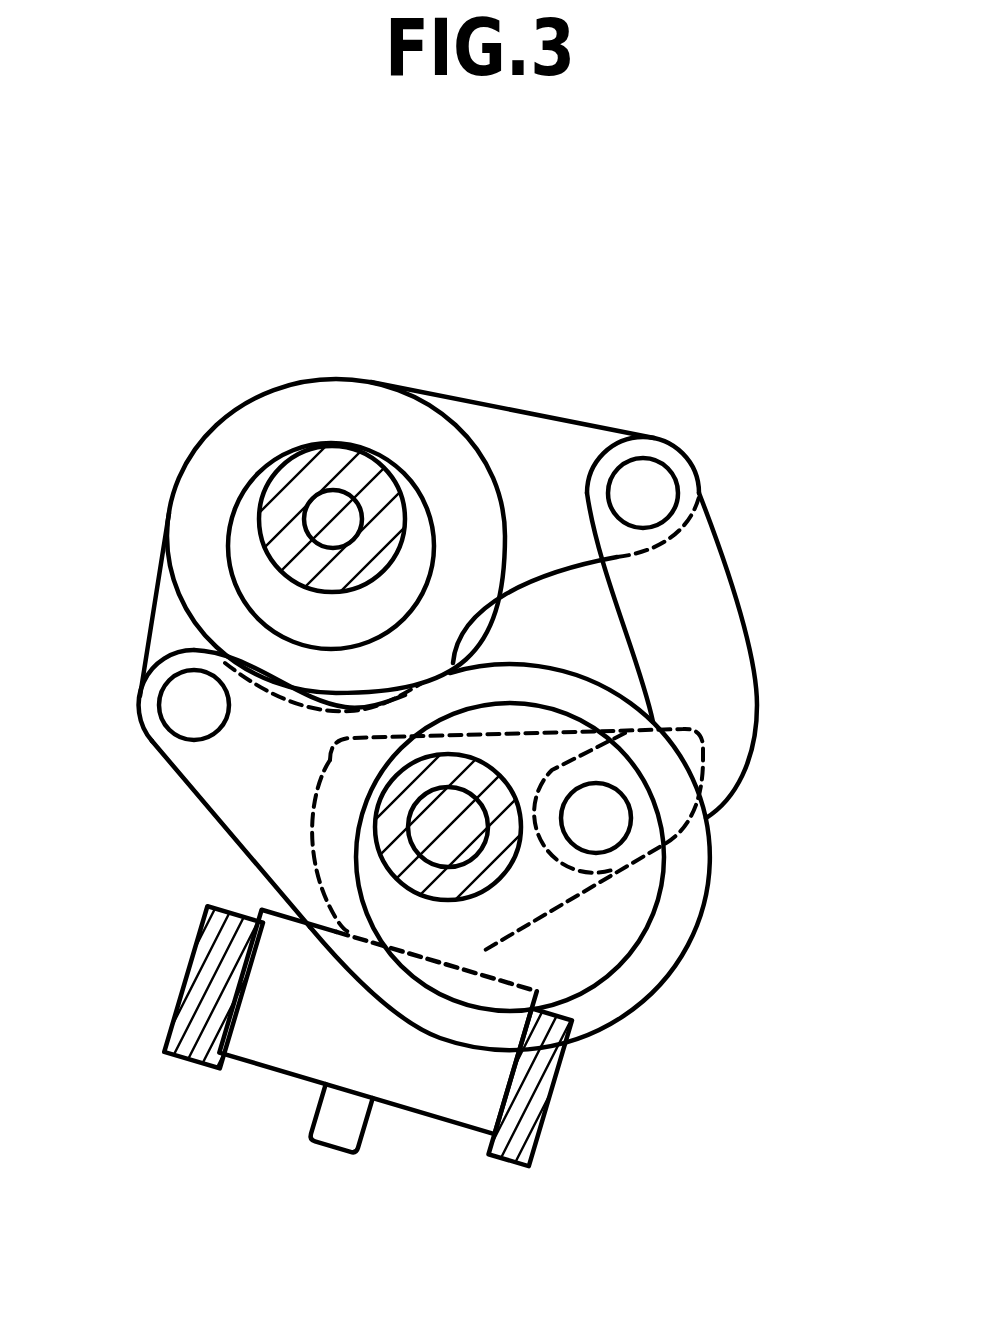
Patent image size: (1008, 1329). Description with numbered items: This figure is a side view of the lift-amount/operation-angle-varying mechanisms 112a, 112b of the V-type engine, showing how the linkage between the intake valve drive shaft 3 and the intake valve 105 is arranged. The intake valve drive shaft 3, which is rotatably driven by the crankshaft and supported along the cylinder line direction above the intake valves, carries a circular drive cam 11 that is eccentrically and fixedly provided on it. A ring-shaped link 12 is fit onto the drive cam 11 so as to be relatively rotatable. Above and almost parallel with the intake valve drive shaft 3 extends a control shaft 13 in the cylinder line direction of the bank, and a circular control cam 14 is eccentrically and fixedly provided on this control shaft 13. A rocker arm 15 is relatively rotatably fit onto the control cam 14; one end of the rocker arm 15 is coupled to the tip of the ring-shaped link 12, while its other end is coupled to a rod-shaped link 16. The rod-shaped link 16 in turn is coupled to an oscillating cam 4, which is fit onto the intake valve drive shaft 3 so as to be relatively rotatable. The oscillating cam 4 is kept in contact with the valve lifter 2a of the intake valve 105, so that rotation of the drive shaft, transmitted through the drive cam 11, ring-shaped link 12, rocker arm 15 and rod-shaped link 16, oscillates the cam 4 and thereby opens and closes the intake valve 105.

The valve lifter 2a is at (460, 1088).
The intake valve drive shaft 3 is at (497, 863).
The oscillating cam 4 is at (530, 935).
The drive cam 11 is at (650, 967).
The ring-shaped link 12 is at (192, 793).
The control shaft 13 is at (336, 445).
The control cam 14 is at (247, 547).
The rocker arm 15 is at (516, 383).
The rod-shaped link 16 is at (715, 632).
The intake valve 105 is at (340, 1152).
The lift-amount/operation-angle-varying mechanism 112a is at (664, 321).
The lift-amount/operation-angle-varying mechanism 112b is at (299, 679).